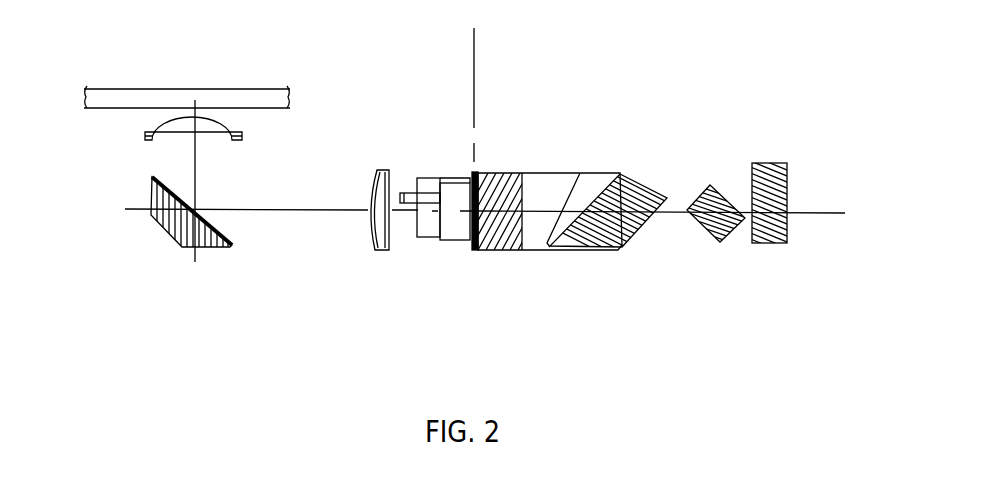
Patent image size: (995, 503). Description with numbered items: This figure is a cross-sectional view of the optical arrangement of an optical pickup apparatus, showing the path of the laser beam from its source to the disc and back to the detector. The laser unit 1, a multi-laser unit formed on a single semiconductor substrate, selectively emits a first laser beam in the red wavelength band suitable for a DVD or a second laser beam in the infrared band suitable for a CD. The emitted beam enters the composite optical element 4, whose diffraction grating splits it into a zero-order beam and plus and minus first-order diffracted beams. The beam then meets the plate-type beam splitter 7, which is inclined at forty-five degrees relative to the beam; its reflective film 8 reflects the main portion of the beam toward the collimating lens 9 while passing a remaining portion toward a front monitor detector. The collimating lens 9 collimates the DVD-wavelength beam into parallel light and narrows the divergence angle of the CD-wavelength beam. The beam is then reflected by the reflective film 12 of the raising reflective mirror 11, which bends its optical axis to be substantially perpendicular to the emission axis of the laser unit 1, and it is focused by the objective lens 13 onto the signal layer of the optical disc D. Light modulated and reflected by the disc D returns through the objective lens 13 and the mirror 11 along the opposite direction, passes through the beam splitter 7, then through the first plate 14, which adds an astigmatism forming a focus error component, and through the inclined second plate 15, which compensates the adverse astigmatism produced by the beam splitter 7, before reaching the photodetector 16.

The optical disc D is at (122, 90).
The objective lens 13 is at (152, 142).
The raising reflective mirror 11 is at (150, 198).
The reflective film 12 is at (233, 237).
The collimating lens 9 is at (373, 253).
The laser unit 1 is at (417, 243).
The composite optical element 4 is at (448, 242).
The reflective film 8 is at (475, 253).
The beam splitter 7 is at (525, 255).
The first plate 14 is at (637, 237).
The second plate 15 is at (707, 233).
The photodetector 16 is at (767, 243).